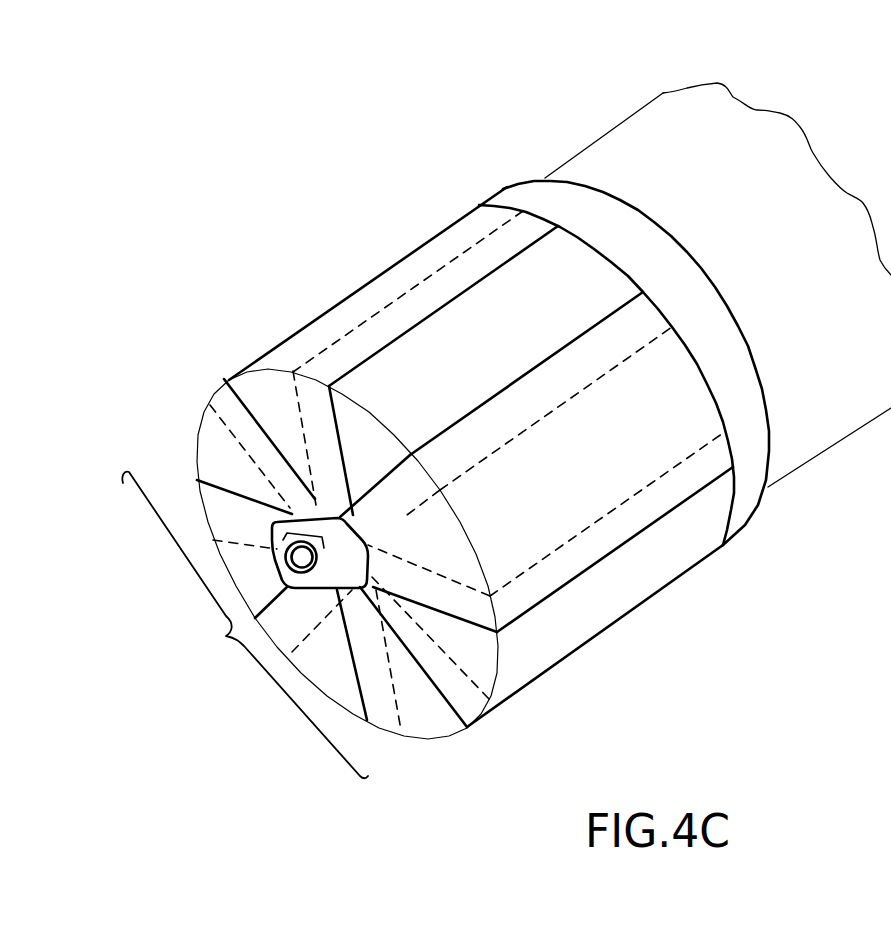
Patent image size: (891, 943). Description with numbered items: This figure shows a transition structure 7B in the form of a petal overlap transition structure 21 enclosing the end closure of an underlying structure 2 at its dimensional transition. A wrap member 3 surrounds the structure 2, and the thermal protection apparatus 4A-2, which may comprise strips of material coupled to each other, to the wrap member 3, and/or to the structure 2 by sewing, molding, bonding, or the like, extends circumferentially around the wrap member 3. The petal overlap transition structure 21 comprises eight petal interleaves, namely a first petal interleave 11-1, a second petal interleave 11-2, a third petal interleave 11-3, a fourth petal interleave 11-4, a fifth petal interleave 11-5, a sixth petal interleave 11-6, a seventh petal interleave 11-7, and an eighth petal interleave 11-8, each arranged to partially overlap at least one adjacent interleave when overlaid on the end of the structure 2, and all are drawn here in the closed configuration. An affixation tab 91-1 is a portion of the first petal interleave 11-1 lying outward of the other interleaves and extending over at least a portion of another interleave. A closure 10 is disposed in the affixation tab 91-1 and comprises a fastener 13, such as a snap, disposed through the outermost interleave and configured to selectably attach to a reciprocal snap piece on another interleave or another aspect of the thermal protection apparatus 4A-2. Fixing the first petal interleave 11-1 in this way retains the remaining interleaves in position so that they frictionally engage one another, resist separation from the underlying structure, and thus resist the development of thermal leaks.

The transition structure 7B is at (383, 168).
The structure 2 is at (628, 138).
The wrap member 3 is at (520, 197).
The thermal protection apparatus 4A-2 is at (384, 285).
The first petal interleave 11-1 is at (446, 542).
The second petal interleave 11-2 is at (352, 432).
The third petal interleave 11-3 is at (262, 389).
The fourth petal interleave 11-4 is at (210, 460).
The fifth petal interleave 11-5 is at (254, 584).
The sixth petal interleave 11-6 is at (338, 678).
The seventh petal interleave 11-7 is at (437, 722).
The eighth petal interleave 11-8 is at (485, 644).
The closure 10 is at (307, 522).
The fastener 13 is at (286, 558).
The affixation tab 91-1 is at (332, 541).
The petal overlap transition structure 21 is at (245, 625).